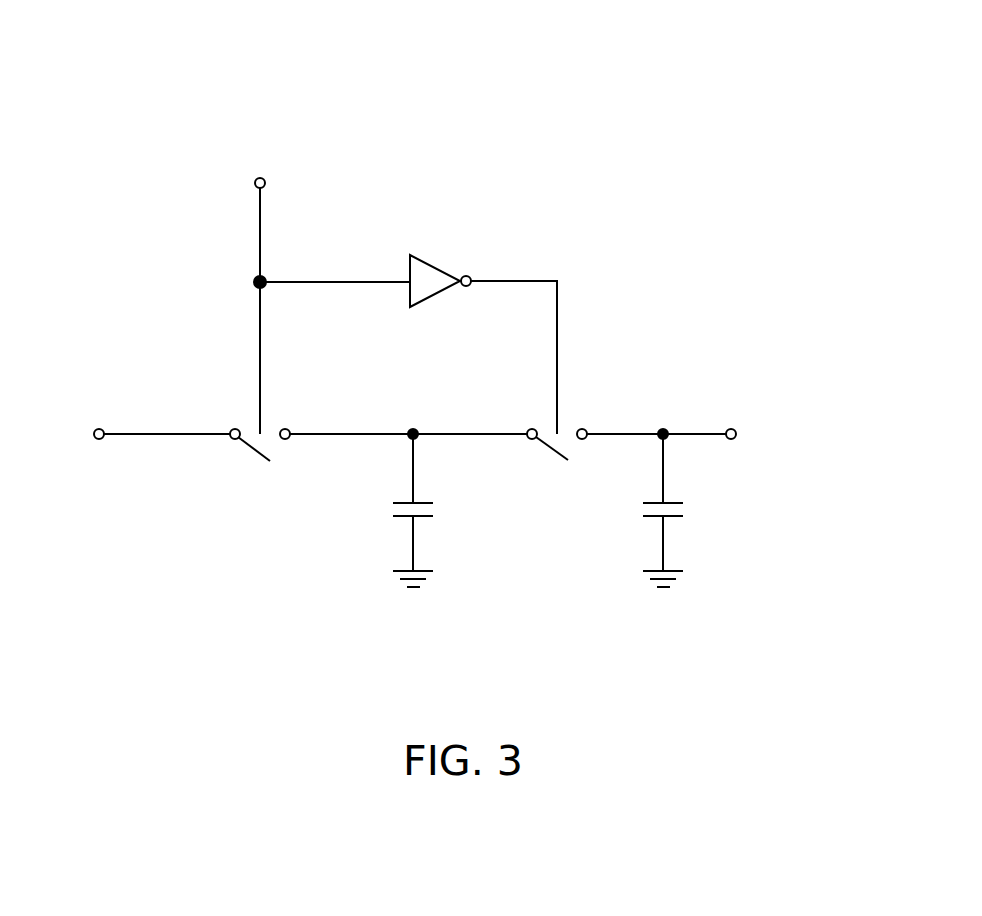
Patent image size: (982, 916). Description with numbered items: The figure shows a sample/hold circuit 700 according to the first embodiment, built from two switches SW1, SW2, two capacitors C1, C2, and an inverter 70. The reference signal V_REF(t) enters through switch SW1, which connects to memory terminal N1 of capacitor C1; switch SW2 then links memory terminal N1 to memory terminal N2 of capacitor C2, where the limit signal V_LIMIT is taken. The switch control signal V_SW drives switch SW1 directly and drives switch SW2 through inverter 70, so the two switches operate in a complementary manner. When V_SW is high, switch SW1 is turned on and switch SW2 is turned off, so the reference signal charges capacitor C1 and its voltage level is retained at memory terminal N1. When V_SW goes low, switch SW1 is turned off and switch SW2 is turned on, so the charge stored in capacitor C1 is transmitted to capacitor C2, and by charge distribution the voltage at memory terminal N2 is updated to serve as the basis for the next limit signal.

The sample/hold circuit 700 is at (415, 298).
The inverter 70 is at (436, 268).
The switch SW1 is at (260, 463).
The switch SW2 is at (557, 463).
The capacitor C1 is at (395, 510).
The capacitor C2 is at (645, 510).
The memory terminal N1 is at (411, 422).
The memory terminal N2 is at (661, 422).